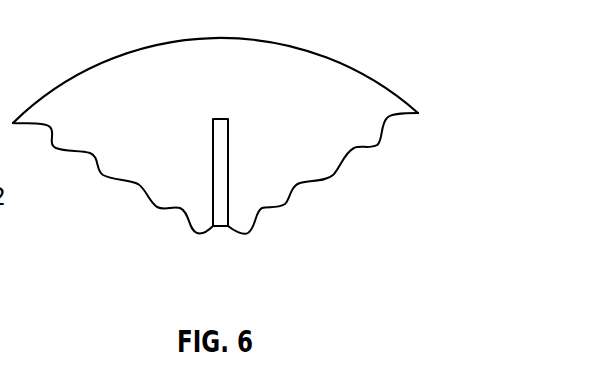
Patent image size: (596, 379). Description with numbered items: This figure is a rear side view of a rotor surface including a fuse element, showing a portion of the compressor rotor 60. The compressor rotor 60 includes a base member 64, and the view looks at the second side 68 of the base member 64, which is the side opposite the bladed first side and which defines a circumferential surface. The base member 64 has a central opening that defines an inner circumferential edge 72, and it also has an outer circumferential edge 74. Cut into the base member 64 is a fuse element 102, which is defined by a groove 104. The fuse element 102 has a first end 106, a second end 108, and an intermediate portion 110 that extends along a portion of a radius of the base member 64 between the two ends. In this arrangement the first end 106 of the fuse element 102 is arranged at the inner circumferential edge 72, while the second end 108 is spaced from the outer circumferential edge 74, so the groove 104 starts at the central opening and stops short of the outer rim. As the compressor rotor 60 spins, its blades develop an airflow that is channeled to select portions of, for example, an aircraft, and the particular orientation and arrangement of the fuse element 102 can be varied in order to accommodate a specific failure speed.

The compressor rotor 60 is at (353, 269).
The base member 64 is at (92, 62).
The second side 68 is at (72, 138).
The inner circumferential edge 72 is at (203, 235).
The outer circumferential edge 74 is at (255, 40).
The fuse element 102 is at (243, 157).
The groove 104 is at (206, 139).
The first end 106 is at (229, 228).
The second end 108 is at (220, 100).
The intermediate portion 110 is at (213, 175).